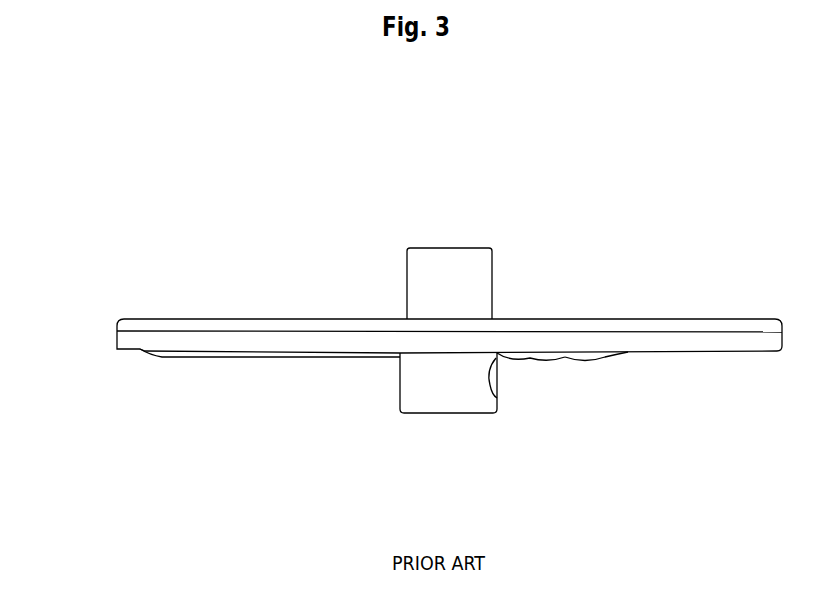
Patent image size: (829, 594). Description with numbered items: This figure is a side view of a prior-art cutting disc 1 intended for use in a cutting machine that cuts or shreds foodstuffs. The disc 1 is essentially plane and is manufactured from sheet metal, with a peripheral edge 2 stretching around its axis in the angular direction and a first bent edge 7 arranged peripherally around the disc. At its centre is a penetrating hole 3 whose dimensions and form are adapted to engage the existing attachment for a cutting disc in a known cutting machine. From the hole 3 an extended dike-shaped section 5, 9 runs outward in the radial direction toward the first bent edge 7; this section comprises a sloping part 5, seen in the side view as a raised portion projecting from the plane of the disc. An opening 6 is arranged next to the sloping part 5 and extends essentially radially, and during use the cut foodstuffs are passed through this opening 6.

The cutting disc 1 is at (210, 237).
The peripheral edge 2 is at (115, 332).
The penetrating hole 3 is at (437, 247).
The sloping part 5 is at (518, 358).
The opening 6 is at (393, 355).
The first bent edge 7 is at (630, 320).
The dike-shaped section 9 is at (583, 358).